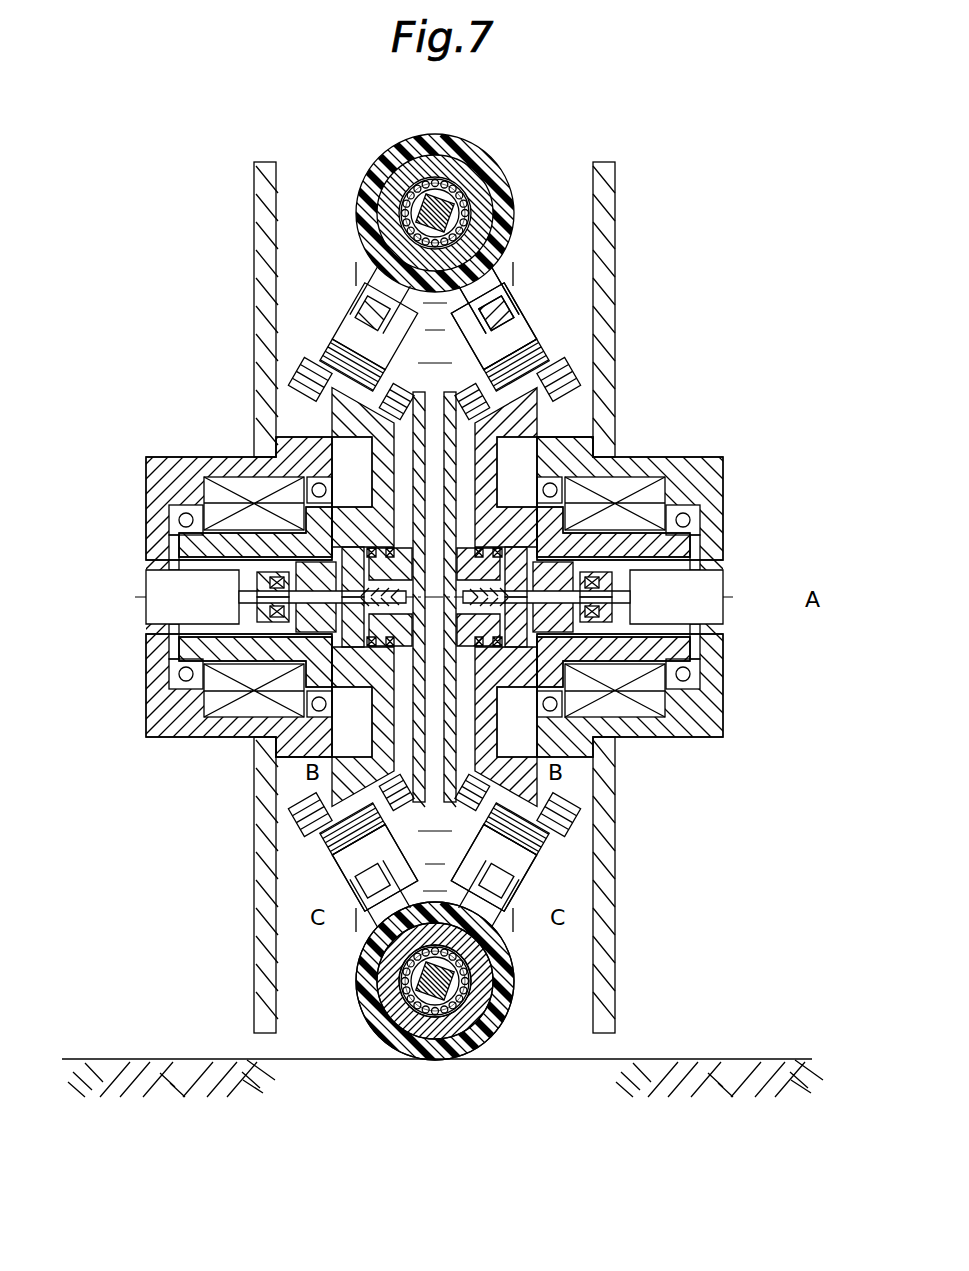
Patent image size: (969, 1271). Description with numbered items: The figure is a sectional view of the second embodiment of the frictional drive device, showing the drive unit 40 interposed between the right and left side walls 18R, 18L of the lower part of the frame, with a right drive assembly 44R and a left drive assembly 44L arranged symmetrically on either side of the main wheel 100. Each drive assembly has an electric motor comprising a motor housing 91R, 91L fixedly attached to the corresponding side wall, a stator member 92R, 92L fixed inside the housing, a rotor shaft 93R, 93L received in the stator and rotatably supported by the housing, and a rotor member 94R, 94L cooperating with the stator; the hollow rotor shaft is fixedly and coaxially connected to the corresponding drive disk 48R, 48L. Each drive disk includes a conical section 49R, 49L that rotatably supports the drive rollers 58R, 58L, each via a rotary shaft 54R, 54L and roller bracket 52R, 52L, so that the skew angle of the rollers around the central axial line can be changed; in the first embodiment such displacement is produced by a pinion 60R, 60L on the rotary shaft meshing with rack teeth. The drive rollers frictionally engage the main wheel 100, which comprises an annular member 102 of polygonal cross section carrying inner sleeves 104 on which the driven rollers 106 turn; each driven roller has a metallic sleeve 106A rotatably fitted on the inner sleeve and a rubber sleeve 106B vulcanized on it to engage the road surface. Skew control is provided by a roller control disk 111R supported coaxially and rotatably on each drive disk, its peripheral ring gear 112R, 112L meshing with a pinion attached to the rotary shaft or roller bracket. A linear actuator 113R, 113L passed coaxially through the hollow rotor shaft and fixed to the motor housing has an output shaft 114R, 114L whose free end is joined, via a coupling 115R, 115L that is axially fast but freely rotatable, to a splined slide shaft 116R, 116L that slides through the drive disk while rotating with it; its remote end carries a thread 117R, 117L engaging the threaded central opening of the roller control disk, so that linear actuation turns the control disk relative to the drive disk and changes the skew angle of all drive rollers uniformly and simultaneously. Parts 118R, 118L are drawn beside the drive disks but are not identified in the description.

The side wall 18R is at (262, 250).
The side wall 18L is at (606, 250).
The drive unit 40 is at (552, 321).
The drive assembly 44R is at (140, 706).
The drive assembly 44L is at (716, 448).
The drive disk 48R is at (408, 455).
The drive disk 48L is at (462, 468).
The conical section 49R is at (331, 368).
The conical section 49L is at (538, 368).
The roller bracket 52R is at (365, 882).
The roller bracket 52L is at (520, 882).
The rotary shaft 54R is at (300, 805).
The rotary shaft 54L is at (570, 808).
The drive roller 58R is at (392, 286).
The drive roller 58L is at (480, 286).
The pinion 60R is at (334, 860).
The pinion 60L is at (535, 860).
The motor housing 91R is at (190, 505).
The motor housing 91L is at (718, 505).
The stator member 92R is at (225, 490).
The stator member 92L is at (612, 478).
The rotor shaft 93R is at (210, 560).
The rotor shaft 93L is at (690, 558).
The rotor member 94R is at (248, 543).
The rotor member 94L is at (600, 553).
The main wheel 100 is at (495, 1047).
The annular member 102 is at (410, 975).
The inner sleeve 104 is at (392, 1008).
The driven roller 106 is at (425, 1062).
The metallic sleeve 106A is at (482, 975).
The rubber sleeve 106B is at (500, 1031).
The roller control disk 111R is at (578, 452).
The ring gear 112R is at (304, 822).
The ring gear 112L is at (565, 822).
The linear actuator 113R is at (255, 595).
The linear actuator 113L is at (712, 592).
The output shaft 114R is at (275, 600).
The output shaft 114L is at (640, 600).
The coupling 115R is at (300, 608).
The coupling 115L is at (600, 620).
The slide shaft 116R is at (172, 680).
The slide shaft 116L is at (652, 524).
The thread 117R is at (250, 470).
The thread 117L is at (690, 655).
The right rotor bracket 118R is at (345, 440).
The left rotor bracket 118L is at (705, 700).